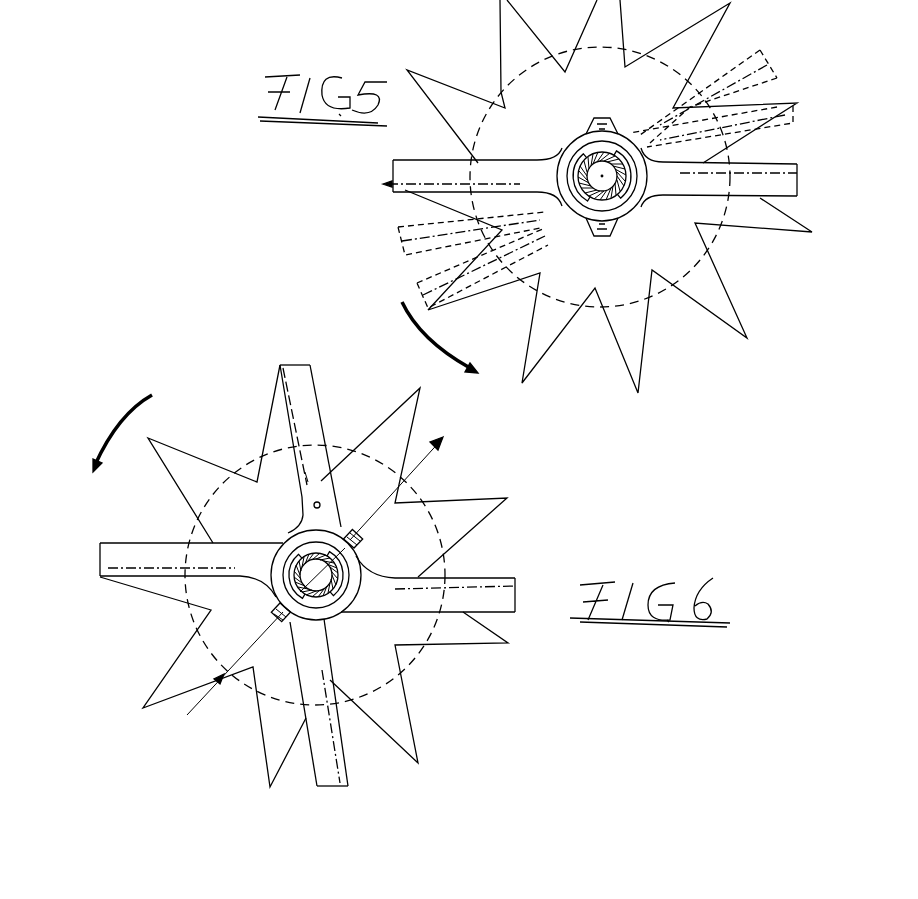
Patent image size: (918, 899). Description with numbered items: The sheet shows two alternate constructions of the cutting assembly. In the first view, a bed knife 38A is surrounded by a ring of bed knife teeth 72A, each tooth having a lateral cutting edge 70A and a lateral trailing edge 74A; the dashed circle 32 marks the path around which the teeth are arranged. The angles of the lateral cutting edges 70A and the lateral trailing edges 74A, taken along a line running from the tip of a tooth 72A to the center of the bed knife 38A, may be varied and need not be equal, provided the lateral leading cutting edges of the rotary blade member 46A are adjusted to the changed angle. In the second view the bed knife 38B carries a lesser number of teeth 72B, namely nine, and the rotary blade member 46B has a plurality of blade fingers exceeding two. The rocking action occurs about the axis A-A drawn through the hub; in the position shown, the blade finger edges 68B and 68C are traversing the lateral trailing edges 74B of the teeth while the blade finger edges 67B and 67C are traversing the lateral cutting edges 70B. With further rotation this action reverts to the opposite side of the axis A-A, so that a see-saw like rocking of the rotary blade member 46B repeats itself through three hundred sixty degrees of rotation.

In FIG. 5, the rotary cutter circle of rotation 32 is at (495, 87).
In FIG. 6, the rotary cutter circle of rotation 32 is at (187, 525).
In FIG. 5, the bed knife 38A is at (556, 106).
In FIG. 5, the rotary blade member 46A is at (541, 165).
In FIG. 5, the lateral cutting edges 70A is at (695, 56).
In FIG. 5, the bed knife teeth 72A is at (748, 212).
In FIG. 5, the lateral trailing edges 74A is at (757, 98).
In FIG. 6, the hub 38B is at (380, 550).
In FIG. 6, the rotary blade member 46B is at (323, 628).
In FIG. 6, the blade finger edge 67B is at (473, 576).
In FIG. 6, the blade finger edge 67C is at (348, 777).
In FIG. 6, the blade finger edge 68B is at (152, 580).
In FIG. 6, the blade finger edge 68C is at (287, 405).
In FIG. 6, the lateral cutting edges 70B is at (460, 548).
In FIG. 6, the zigzag blade strip 72B is at (460, 506).
In FIG. 6, the lateral trailing edges 74B is at (268, 428).
In FIG. 6, the axis A- A is at (313, 579).